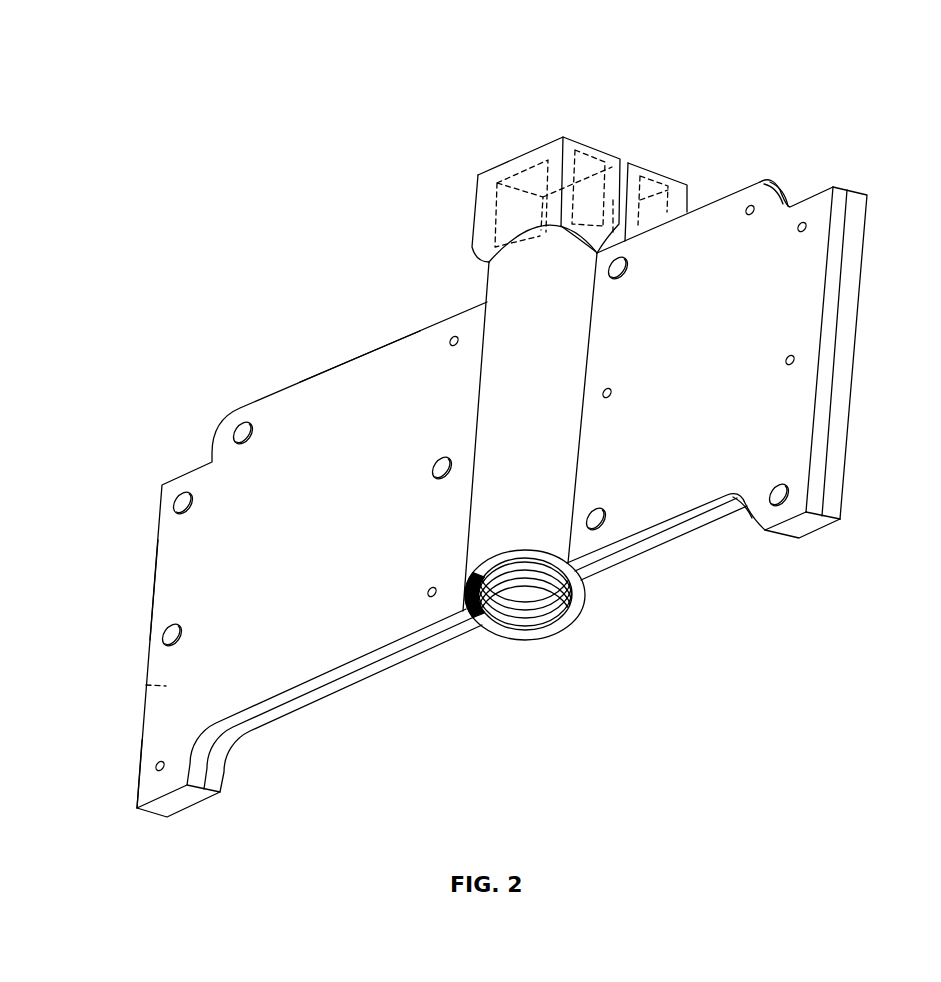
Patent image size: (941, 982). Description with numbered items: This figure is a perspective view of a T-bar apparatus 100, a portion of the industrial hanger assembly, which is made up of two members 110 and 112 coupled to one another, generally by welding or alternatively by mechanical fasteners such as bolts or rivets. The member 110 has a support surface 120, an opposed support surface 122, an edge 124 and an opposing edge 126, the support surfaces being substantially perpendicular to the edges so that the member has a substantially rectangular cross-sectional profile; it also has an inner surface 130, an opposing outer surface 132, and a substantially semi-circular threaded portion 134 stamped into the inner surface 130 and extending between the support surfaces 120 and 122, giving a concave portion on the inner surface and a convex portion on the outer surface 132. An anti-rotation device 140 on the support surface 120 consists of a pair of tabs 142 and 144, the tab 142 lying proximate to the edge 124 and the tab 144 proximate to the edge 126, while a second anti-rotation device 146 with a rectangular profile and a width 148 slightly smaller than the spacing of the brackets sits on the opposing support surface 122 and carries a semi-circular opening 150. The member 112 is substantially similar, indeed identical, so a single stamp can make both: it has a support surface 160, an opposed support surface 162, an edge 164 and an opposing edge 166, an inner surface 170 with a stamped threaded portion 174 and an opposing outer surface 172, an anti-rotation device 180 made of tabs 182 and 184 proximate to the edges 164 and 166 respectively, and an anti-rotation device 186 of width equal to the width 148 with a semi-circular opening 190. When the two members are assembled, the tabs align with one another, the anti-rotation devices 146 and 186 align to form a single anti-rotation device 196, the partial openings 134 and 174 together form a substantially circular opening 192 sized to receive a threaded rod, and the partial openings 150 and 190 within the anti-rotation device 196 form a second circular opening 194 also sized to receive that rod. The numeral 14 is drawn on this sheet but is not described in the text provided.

The bracket assembly 14 is at (261, 193).
The T-bar apparatus 100 is at (763, 136).
The member 110 is at (165, 533).
The member 112 is at (855, 210).
The support surface 120 is at (303, 689).
The opposed support surface 122 is at (353, 357).
The edge 124 is at (148, 610).
The opposing edge 126 is at (826, 362).
The inner surface 130 is at (259, 714).
The outer surface 132 is at (291, 515).
The threaded portion 134 is at (503, 568).
The anti-rotation device 140 is at (854, 491).
The tab 142 is at (142, 788).
The tab 144 is at (795, 503).
The anti-rotation device 146 is at (483, 202).
The width 148 is at (565, 113).
The semi-circular opening 150 is at (587, 126).
The support surface 160 is at (358, 676).
The opposed support surface 162 is at (792, 184).
The edge 164 is at (146, 684).
The opposing edge 166 is at (848, 310).
The inner surface 170 is at (620, 554).
The outer surface 172 is at (670, 544).
The threaded portion 174 is at (465, 600).
The anti-rotation device 180 is at (835, 538).
The tab 182 is at (176, 812).
The tab 184 is at (805, 533).
The anti-rotation device 186 is at (670, 180).
The semi-circular opening 190 is at (650, 148).
The circular opening 192 is at (383, 533).
The circular opening 194 is at (600, 47).
The anti-rotation device 196 is at (474, 152).